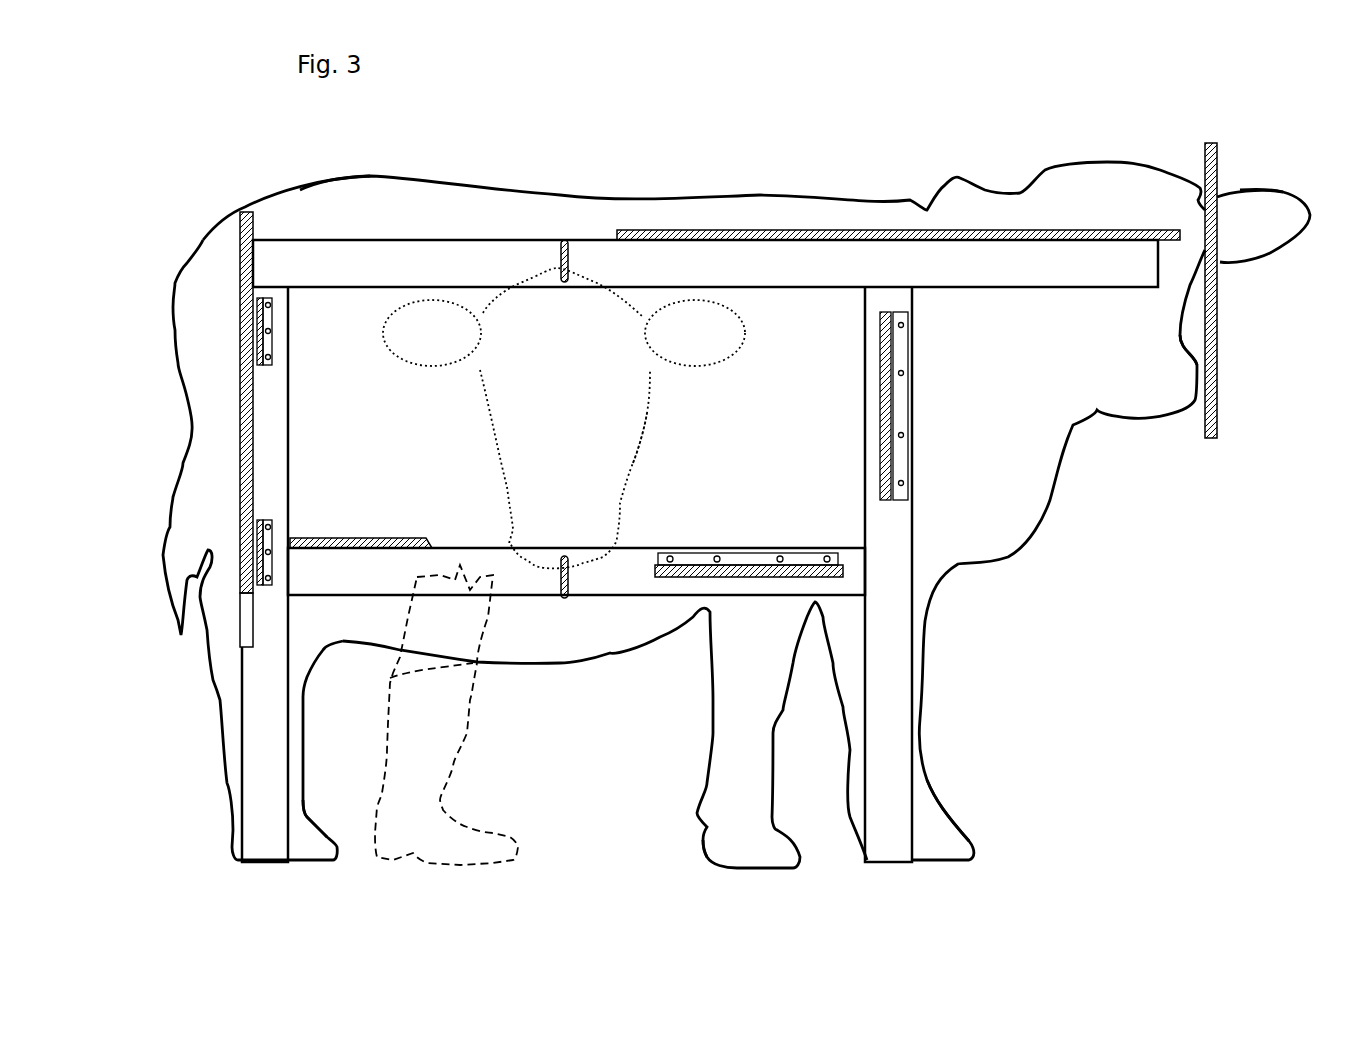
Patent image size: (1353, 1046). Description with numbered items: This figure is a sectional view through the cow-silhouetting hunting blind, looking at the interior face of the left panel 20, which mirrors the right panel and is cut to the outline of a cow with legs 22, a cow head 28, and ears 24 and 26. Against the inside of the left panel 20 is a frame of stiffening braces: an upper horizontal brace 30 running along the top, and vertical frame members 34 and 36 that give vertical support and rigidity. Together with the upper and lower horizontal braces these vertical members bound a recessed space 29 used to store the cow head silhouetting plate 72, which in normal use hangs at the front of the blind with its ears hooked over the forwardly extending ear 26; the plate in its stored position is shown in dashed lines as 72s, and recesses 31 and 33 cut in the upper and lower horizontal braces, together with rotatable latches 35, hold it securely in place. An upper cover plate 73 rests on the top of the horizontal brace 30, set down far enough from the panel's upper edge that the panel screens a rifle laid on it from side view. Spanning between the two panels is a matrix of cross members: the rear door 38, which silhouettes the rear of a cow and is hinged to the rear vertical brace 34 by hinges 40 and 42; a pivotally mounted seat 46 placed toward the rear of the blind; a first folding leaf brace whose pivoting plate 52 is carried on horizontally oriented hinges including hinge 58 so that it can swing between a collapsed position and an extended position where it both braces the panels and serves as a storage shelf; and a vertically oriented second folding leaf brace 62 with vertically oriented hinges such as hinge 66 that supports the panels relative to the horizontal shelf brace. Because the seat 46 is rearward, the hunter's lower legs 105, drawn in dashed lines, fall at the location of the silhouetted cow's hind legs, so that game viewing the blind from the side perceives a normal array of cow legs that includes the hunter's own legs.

The left panel 20 is at (348, 213).
The legs 22 is at (307, 843).
The ear 24 is at (977, 187).
The ear 26 is at (1252, 232).
The cow head 28 is at (1122, 345).
The recessed space 29 is at (787, 400).
The horizontal brace 30 is at (447, 267).
The recess 31 is at (578, 280).
The recess 33 is at (537, 565).
The vertical frame member 34 is at (260, 763).
The rotatable latches 35 is at (570, 273).
The vertical frame member 36 is at (897, 675).
The rear door 38 is at (240, 452).
The hinge 40 is at (268, 337).
The hinge 42 is at (268, 535).
The seat 46 is at (385, 540).
The pivoting plate 52 is at (749, 507).
The hinge 58 is at (795, 560).
The folding leaf brace 62 is at (905, 457).
The hinge 66 is at (957, 406).
The cow head silhouetting plate 72 is at (1213, 352).
The stored cow head silhouetting plate 72s is at (630, 440).
The upper cover plate 73 is at (760, 232).
The hunter's lower legs 105 is at (432, 730).